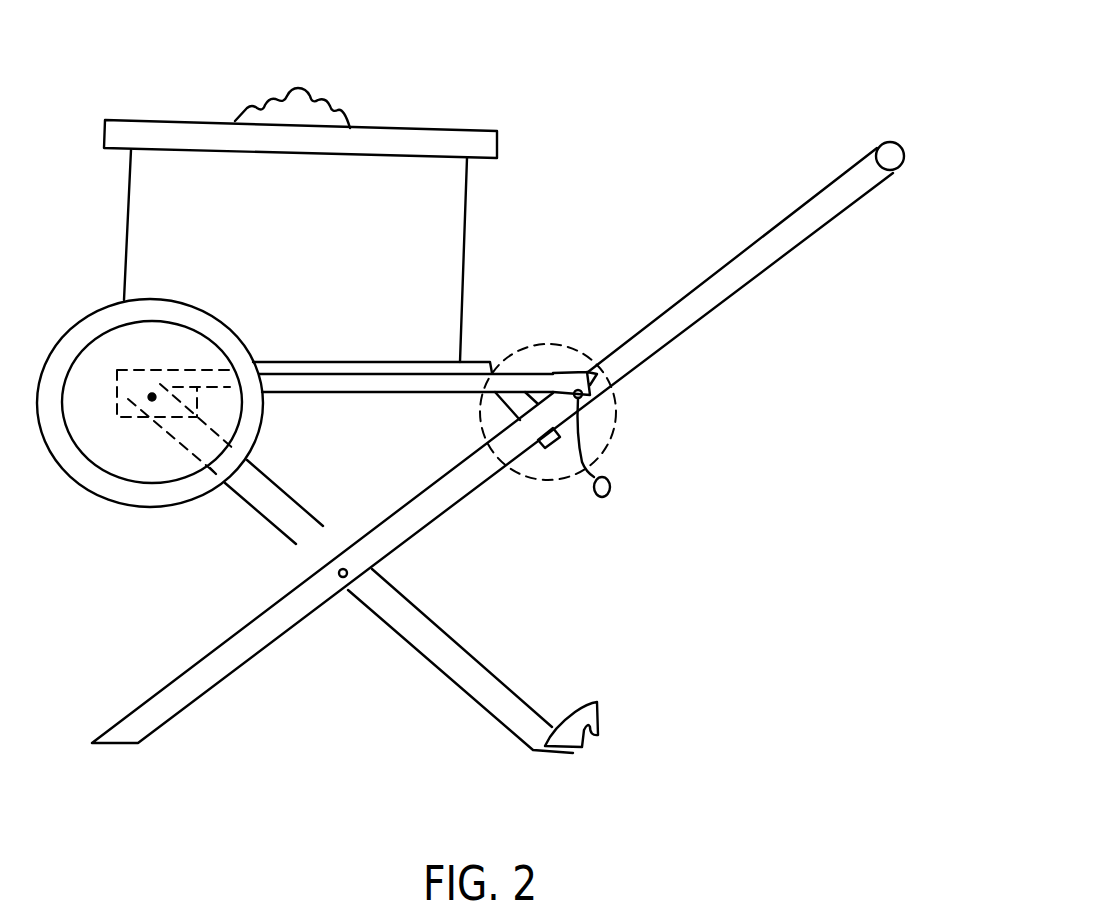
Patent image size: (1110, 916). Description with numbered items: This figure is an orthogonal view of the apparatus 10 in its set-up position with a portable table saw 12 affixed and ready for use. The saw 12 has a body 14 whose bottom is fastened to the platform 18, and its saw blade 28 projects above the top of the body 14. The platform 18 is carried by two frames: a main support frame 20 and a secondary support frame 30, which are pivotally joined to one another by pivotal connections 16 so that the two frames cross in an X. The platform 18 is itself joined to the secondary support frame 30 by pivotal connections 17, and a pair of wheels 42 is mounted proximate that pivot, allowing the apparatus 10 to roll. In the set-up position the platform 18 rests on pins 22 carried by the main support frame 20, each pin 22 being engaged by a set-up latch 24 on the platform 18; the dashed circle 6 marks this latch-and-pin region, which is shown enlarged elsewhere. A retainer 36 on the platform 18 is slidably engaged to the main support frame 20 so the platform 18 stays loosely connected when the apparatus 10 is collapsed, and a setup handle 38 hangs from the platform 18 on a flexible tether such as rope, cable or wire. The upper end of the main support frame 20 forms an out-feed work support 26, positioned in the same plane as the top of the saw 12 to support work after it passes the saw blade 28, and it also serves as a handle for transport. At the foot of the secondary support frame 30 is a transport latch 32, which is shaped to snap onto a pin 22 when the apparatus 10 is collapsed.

The dashed circle 6 is at (580, 350).
The apparatus 10 is at (692, 515).
The portable table saw 12 is at (461, 88).
The body 14 is at (467, 230).
The pivotal connections 16 is at (343, 566).
The pivotal connections 17 is at (152, 397).
The platform 18 is at (478, 358).
The main support frame 20 is at (677, 338).
The pins 22 is at (585, 400).
The set-up latch 24 is at (594, 383).
The out-feed work support 26 is at (893, 142).
The saw blade 28 is at (293, 88).
The secondary support frame 30 is at (431, 622).
The transport latch 32 is at (604, 717).
The retainer 36 is at (553, 449).
The setup handle 38 is at (605, 498).
The wheels 42 is at (146, 510).